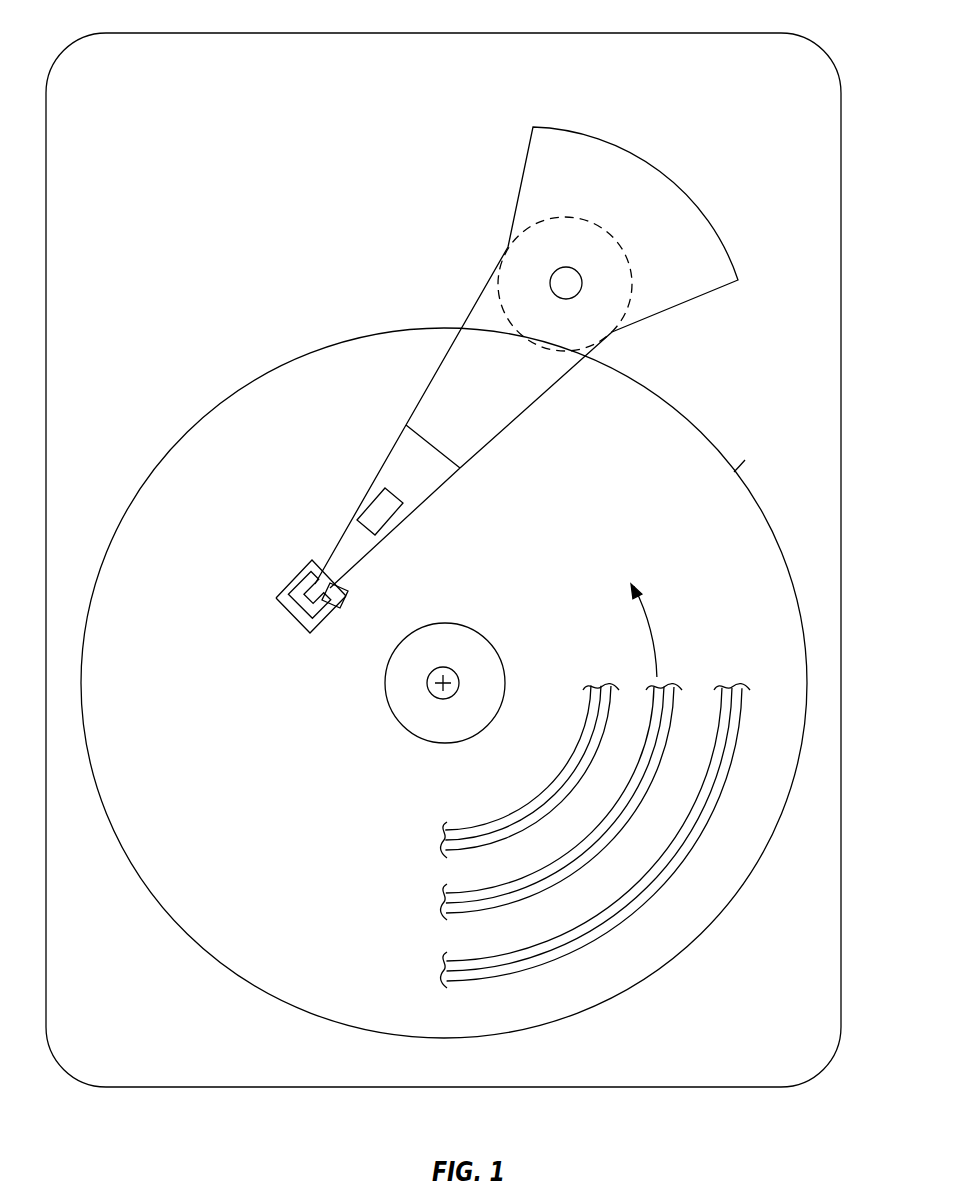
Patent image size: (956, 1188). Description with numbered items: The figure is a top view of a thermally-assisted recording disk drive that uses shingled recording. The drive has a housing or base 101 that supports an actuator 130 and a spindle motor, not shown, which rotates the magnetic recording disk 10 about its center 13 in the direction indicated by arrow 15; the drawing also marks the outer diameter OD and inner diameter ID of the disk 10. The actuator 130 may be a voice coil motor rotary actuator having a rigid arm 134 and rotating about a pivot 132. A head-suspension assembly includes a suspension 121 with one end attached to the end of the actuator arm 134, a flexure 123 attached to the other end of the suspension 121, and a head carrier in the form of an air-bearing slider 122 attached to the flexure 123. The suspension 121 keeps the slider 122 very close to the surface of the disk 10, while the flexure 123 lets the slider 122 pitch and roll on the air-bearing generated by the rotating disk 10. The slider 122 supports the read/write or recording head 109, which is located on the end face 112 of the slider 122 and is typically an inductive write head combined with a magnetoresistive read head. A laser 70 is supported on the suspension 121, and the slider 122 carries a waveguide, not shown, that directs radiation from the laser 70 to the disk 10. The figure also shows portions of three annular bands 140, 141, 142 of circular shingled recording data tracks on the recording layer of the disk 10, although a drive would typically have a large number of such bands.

The housing or base 101 is at (716, 33).
The magnetic recording disk 10 is at (700, 431).
The outer diameter of disk OD is at (735, 470).
The inner diameter of disk ID is at (445, 622).
The center 13 is at (459, 680).
The arrow 15 is at (655, 652).
The actuator 130 is at (663, 183).
The pivot 132 is at (550, 282).
The rigid arm 134 is at (437, 378).
The suspension 121 is at (393, 460).
The laser 70 is at (372, 510).
The air-bearing slider 122 is at (305, 570).
The recording head 109 is at (288, 625).
The end face 112 is at (283, 612).
The flexure 123 is at (323, 600).
The band 140 is at (436, 840).
The band 141 is at (436, 902).
The band 142 is at (436, 970).